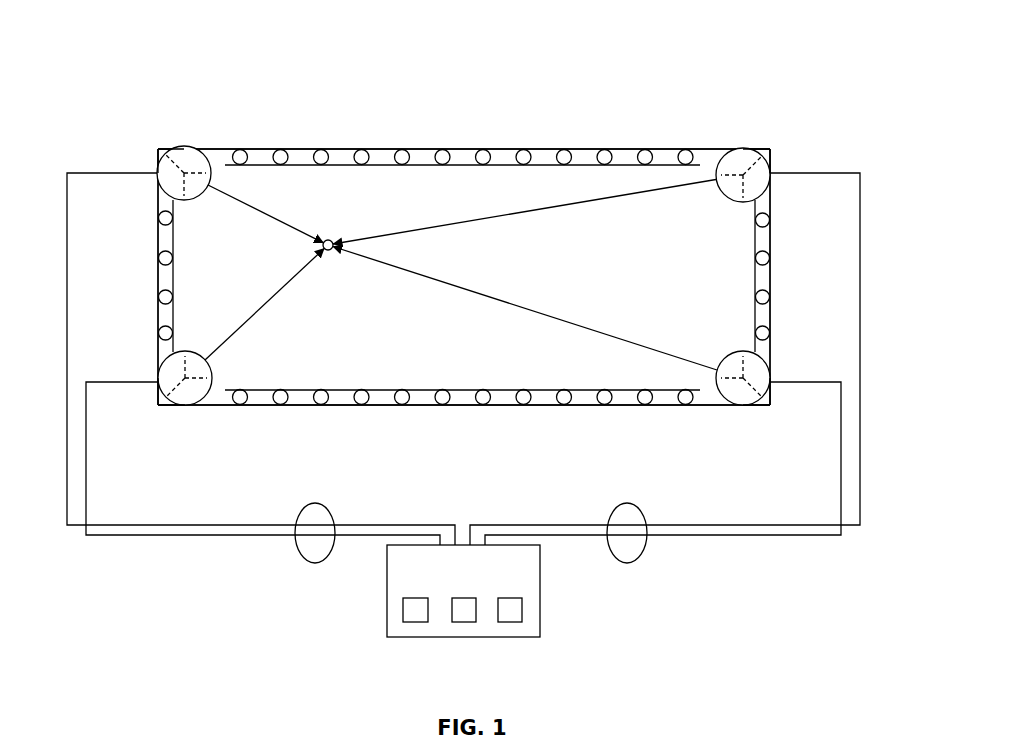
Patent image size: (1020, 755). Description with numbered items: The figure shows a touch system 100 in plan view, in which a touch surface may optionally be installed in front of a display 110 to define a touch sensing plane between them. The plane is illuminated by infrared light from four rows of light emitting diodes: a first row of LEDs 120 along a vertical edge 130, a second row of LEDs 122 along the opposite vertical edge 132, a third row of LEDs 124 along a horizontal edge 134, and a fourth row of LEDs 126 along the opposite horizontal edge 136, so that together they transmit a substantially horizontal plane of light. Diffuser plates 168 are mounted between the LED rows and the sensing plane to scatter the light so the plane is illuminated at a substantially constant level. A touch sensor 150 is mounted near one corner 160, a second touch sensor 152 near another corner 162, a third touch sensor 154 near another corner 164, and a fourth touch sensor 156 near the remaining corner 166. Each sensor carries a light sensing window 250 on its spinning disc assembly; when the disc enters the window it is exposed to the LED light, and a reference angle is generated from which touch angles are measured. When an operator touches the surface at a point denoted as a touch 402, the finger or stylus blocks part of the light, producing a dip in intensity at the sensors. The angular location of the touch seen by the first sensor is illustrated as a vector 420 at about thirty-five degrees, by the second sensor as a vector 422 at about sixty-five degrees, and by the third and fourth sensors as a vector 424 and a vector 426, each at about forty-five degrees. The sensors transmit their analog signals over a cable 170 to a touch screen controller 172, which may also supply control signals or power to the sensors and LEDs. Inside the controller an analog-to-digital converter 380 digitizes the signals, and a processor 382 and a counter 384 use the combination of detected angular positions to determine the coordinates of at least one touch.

The touch system 100 is at (818, 55).
The display 110 is at (482, 204).
The first row of LEDs 120 is at (155, 203).
The second row of LEDs 122 is at (775, 203).
The third row of LEDs 124 is at (464, 237).
The fourth row of LEDs 126 is at (700, 412).
The vertical edge 130 is at (158, 368).
The opposite vertical edge 132 is at (773, 362).
The horizontal edge 134 is at (718, 148).
The opposite horizontal edge 136 is at (715, 405).
The touch sensor 150 is at (200, 148).
The second touch sensor 152 is at (728, 148).
The third touch sensor 154 is at (158, 383).
The fourth touch sensor 156 is at (753, 405).
The corner 160 is at (158, 148).
The corner 162 is at (775, 148).
The corner 164 is at (172, 405).
The corner 166 is at (765, 400).
The diffuser plate 168 is at (618, 166).
The cable 170 is at (312, 563).
The touch screen controller 172 is at (465, 565).
The light sensing window 250 is at (190, 193).
The analog-to-digital converter 380 is at (415, 622).
The processor 382 is at (462, 622).
The counter 384 is at (510, 622).
The touch 402 is at (334, 232).
The vector 420 is at (272, 218).
The vector 422 is at (524, 214).
The vector 424 is at (273, 297).
The vector 426 is at (512, 304).